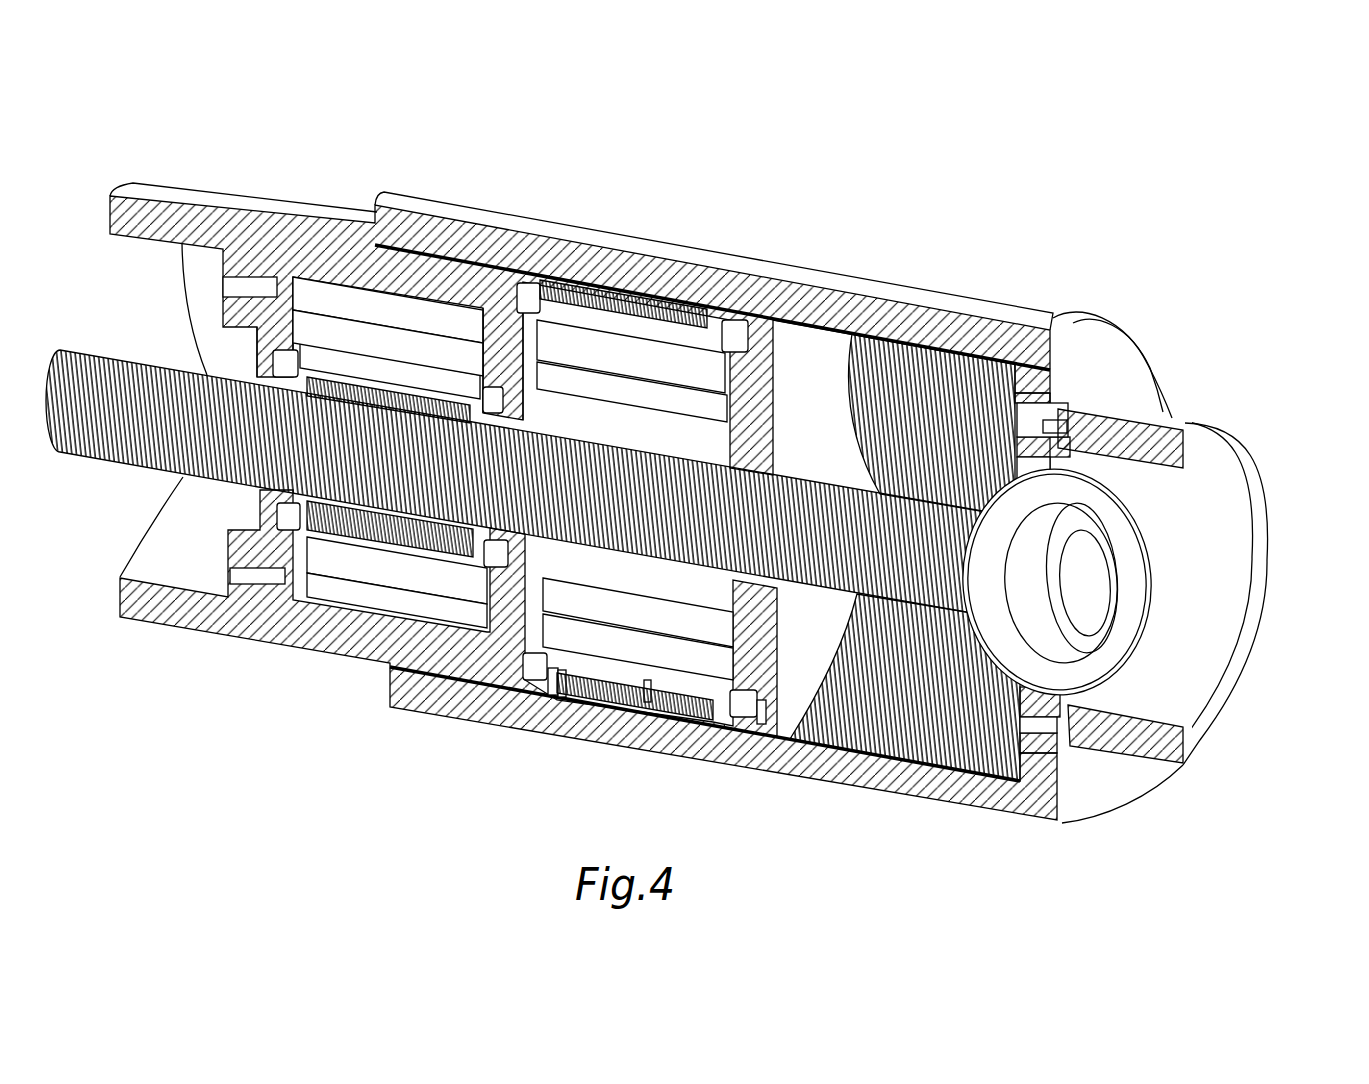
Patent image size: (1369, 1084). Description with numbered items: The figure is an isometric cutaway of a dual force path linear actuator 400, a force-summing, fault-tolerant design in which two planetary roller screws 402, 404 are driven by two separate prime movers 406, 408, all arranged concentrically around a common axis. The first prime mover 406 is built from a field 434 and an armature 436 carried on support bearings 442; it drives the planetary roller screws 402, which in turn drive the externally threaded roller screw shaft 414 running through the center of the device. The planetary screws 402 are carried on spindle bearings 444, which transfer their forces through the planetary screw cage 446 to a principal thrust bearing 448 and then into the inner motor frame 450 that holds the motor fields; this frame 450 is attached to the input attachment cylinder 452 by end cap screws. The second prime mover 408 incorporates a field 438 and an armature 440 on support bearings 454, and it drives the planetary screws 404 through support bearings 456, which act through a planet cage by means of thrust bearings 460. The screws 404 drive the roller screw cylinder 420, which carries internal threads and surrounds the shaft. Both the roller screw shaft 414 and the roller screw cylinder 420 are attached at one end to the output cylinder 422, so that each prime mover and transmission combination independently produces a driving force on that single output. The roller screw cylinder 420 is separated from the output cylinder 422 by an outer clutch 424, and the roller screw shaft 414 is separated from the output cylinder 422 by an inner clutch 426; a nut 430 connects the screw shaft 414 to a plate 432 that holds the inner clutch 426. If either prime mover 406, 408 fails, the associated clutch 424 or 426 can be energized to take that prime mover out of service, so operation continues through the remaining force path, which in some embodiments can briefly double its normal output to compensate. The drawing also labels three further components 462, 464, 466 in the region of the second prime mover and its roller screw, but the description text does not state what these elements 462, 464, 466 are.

The dual force path linear actuator 400 is at (1163, 200).
The planetary roller screws 402 is at (313, 532).
The planetary roller screws 404 is at (635, 290).
The prime mover 406 is at (330, 293).
The prime mover 408 is at (565, 698).
The roller screw shaft 414 is at (843, 512).
The roller screw cylinder 420 is at (677, 247).
The output cylinder 422 is at (1243, 658).
The outer clutch 424 is at (1025, 393).
The inner clutch 426 is at (1050, 465).
The nut 430 is at (373, 308).
The plate 432 is at (410, 345).
The field 434 is at (266, 316).
The armature 436 is at (475, 358).
The field 438 is at (530, 282).
The armature 440 is at (495, 385).
The support bearings 442 is at (360, 537).
The spindle bearings 444 is at (280, 373).
The planetary screw cage 446 is at (785, 357).
The principal thrust bearing 448 is at (175, 205).
The inner motor frame 450 is at (550, 596).
The input attachment cylinder 452 is at (647, 683).
The support bearings 454 is at (573, 640).
The support bearings 456 is at (767, 680).
The thrust bearings 460 is at (725, 320).
The second spring 462 is at (617, 713).
The washer 464 is at (605, 653).
The lock nut 466 is at (780, 722).